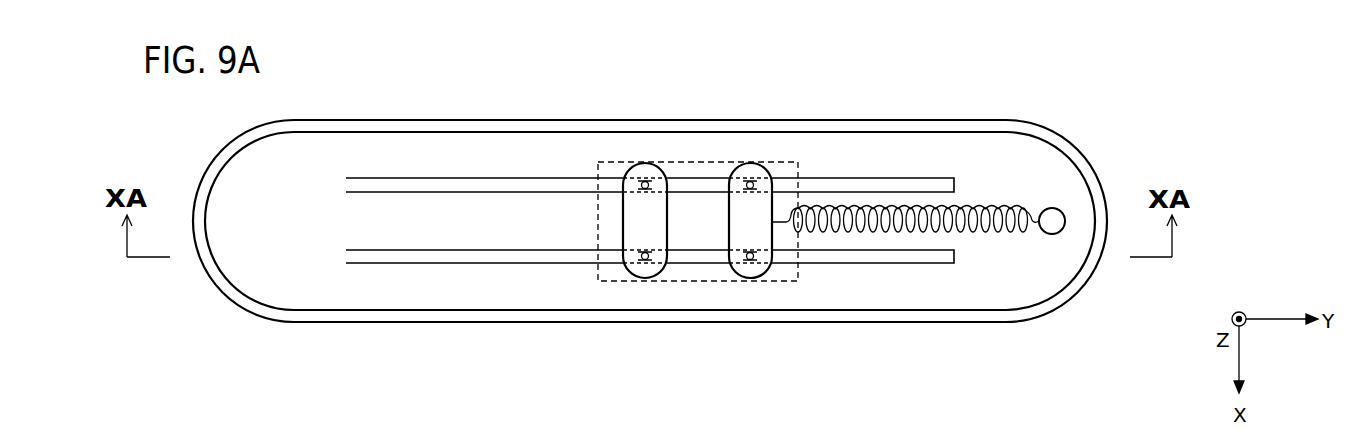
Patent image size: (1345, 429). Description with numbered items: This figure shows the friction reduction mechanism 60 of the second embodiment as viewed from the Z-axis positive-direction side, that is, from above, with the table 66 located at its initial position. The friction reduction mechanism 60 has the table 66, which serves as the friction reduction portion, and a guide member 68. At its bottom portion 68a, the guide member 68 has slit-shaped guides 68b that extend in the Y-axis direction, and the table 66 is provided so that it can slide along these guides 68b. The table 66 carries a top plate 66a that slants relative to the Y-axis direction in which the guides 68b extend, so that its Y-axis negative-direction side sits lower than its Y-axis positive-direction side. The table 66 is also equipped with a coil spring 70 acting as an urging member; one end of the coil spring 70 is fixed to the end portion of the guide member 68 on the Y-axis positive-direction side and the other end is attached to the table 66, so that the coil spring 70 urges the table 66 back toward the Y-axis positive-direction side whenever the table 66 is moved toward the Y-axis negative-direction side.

The friction reduction mechanism 60 is at (1056, 124).
The table 66 is at (630, 160).
The top plate 66a is at (622, 283).
The guide member 68 is at (891, 118).
The bottom portion 68a is at (997, 165).
The guides 68b is at (870, 181).
The coil spring 70 is at (897, 232).